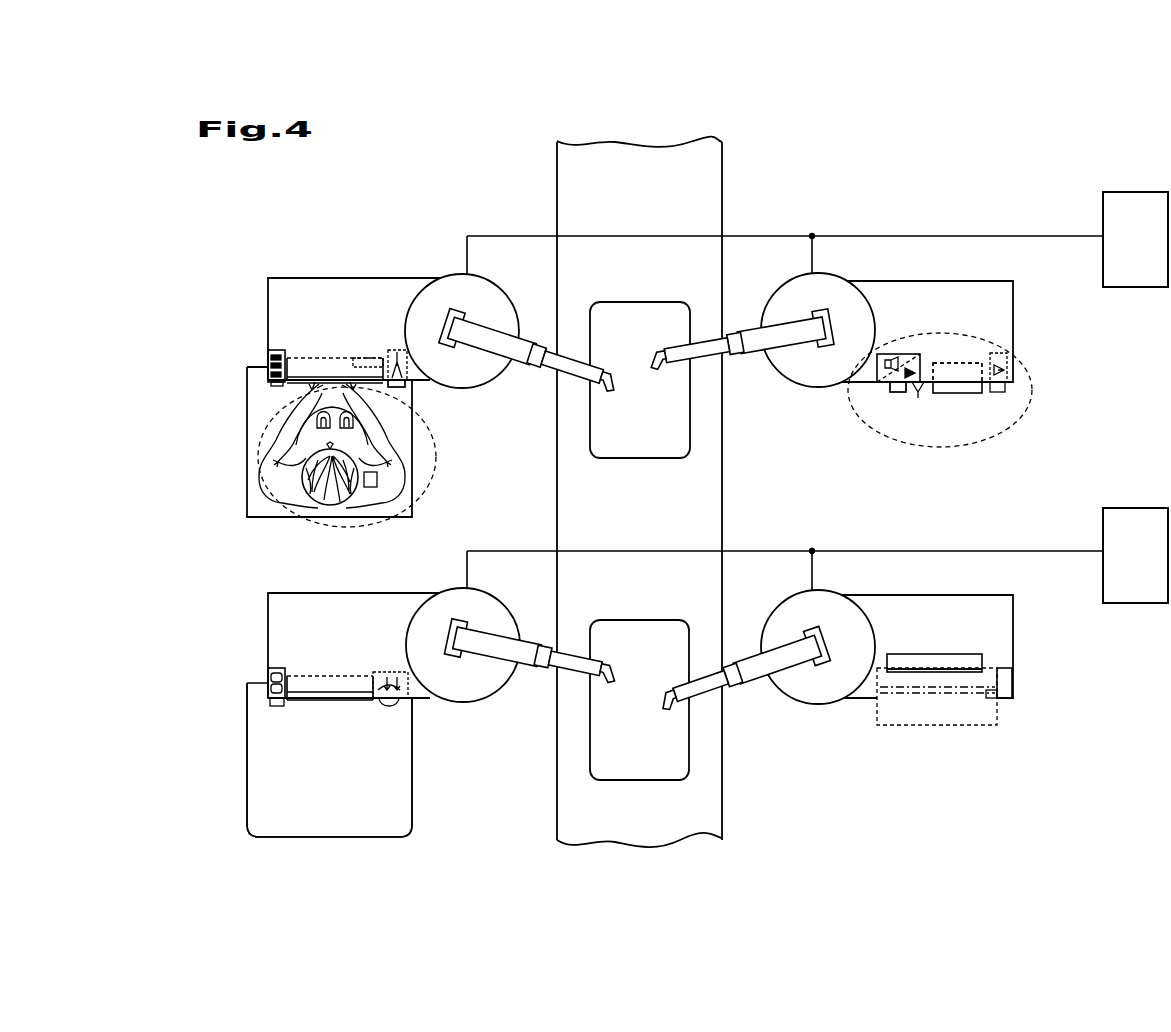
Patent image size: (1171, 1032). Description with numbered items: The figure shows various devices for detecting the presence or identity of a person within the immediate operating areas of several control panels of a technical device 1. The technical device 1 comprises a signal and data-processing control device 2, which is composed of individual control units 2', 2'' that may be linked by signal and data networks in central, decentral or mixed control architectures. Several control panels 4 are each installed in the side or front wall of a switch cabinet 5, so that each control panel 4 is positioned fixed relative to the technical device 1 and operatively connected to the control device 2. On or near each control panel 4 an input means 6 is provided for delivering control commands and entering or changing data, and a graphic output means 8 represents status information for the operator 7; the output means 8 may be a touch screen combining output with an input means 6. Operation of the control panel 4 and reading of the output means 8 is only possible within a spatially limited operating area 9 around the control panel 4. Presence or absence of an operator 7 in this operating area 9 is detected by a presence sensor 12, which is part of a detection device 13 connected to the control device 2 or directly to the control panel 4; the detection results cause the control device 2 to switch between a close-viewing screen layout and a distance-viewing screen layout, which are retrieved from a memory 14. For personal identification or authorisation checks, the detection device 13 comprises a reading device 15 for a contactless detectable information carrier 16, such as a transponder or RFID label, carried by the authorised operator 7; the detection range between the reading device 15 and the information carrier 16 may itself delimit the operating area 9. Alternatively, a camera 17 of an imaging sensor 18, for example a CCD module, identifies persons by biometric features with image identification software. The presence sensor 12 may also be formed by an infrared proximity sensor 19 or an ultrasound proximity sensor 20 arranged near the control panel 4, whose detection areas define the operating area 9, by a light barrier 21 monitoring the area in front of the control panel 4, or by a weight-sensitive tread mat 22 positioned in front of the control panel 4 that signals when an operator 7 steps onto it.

The technical device 1 is at (506, 186).
The control device 2 is at (696, 340).
The control unit 2' is at (1135, 297).
The control unit 2'' is at (1135, 609).
The control panel 4 is at (307, 384).
The switch cabinet 5 is at (313, 292).
The input means 6 is at (917, 400).
The operator 7 is at (263, 455).
The graphic output means 8 is at (950, 393).
The operating area 9 is at (435, 457).
The presence sensor 12 is at (403, 392).
The detection device 13 is at (420, 393).
The memory 14 is at (363, 358).
The reading device 15 is at (394, 350).
The information carrier 16 is at (392, 481).
The camera 17 is at (268, 708).
The imaging sensor 18 is at (270, 670).
The infrared proximity sensor 19 is at (392, 700).
The ultrasound proximity sensor 20 is at (897, 395).
The light barrier 21 is at (993, 704).
The tread mat 22 is at (400, 808).